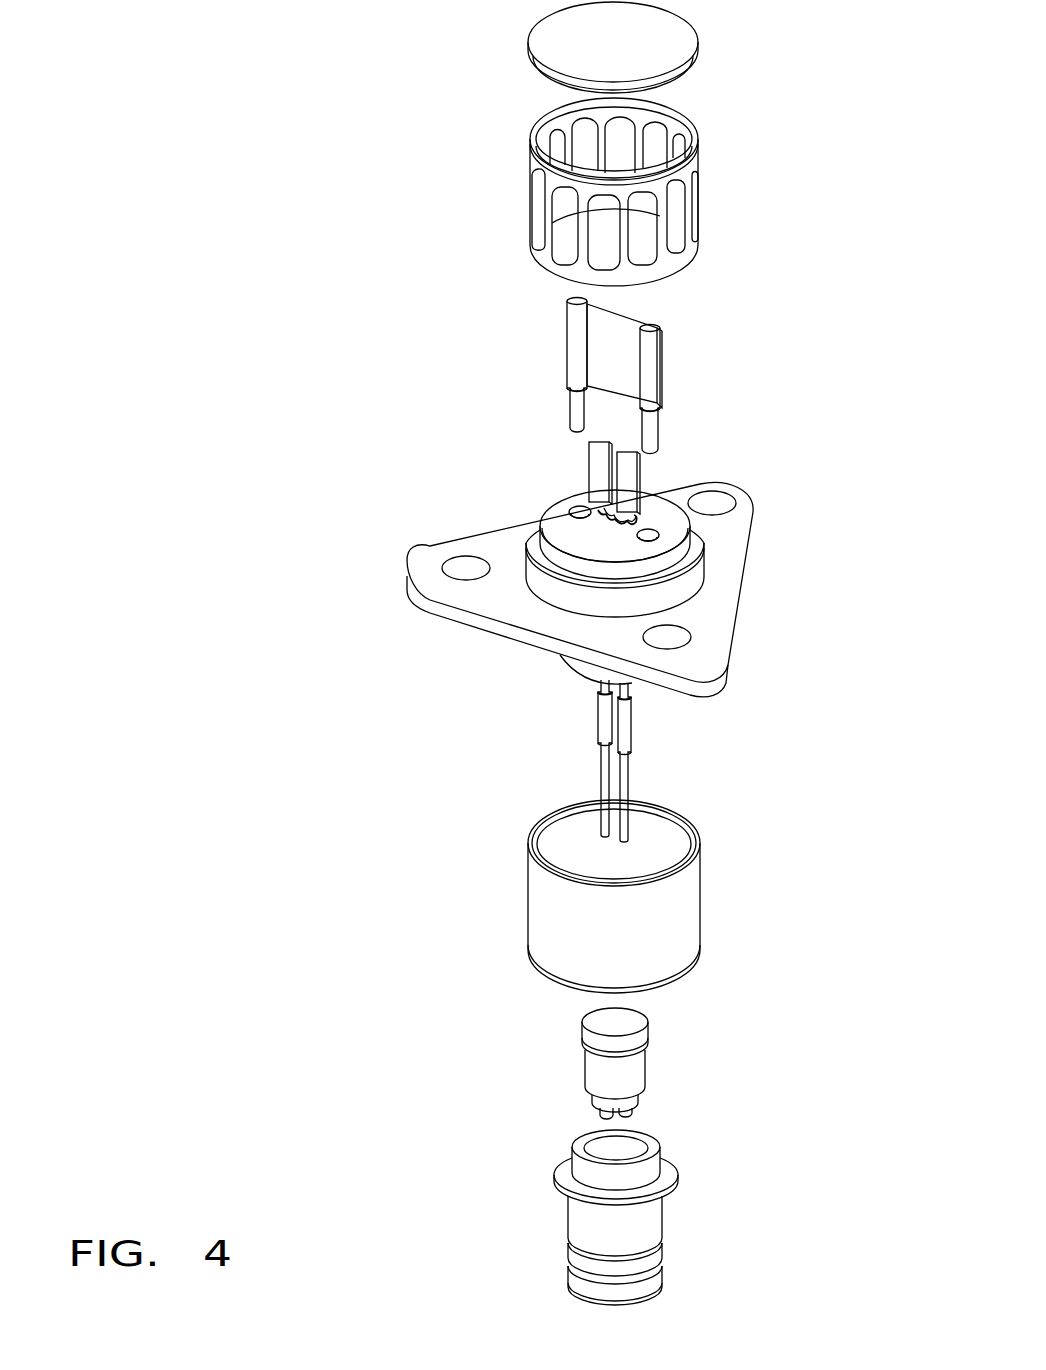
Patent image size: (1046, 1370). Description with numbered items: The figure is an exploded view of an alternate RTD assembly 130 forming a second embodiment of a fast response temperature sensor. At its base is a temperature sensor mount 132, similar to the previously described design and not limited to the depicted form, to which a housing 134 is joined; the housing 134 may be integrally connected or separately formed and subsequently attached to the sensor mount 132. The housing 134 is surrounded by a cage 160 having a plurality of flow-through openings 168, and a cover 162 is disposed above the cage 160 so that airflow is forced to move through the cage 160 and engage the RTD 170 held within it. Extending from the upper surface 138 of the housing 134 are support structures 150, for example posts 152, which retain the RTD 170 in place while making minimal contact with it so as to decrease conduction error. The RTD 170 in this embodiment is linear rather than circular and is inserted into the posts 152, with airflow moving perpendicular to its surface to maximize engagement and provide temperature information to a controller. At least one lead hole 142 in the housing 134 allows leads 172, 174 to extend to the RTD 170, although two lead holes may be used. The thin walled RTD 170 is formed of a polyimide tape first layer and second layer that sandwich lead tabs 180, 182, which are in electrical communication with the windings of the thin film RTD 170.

The RTD assembly 130 is at (212, 148).
The temperature sensor mount 132 is at (723, 568).
The housing 134 is at (562, 557).
The upper surface 138 is at (556, 518).
The lead hole 142 is at (616, 526).
The support structures 150 is at (550, 330).
The posts 152 is at (680, 358).
The cage 160 is at (510, 170).
The cover 162 is at (664, 42).
The flow-through openings 168 is at (648, 248).
The RTD 170 is at (598, 350).
The lead 172 is at (625, 732).
The lead 174 is at (605, 710).
The lead tab 180 is at (602, 472).
The lead tab 182 is at (624, 487).